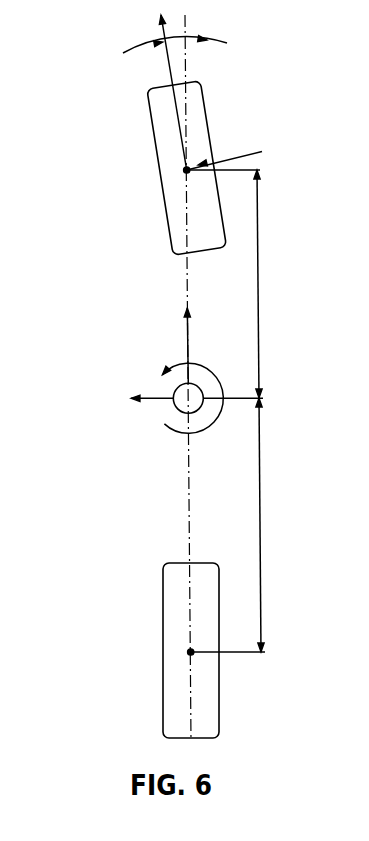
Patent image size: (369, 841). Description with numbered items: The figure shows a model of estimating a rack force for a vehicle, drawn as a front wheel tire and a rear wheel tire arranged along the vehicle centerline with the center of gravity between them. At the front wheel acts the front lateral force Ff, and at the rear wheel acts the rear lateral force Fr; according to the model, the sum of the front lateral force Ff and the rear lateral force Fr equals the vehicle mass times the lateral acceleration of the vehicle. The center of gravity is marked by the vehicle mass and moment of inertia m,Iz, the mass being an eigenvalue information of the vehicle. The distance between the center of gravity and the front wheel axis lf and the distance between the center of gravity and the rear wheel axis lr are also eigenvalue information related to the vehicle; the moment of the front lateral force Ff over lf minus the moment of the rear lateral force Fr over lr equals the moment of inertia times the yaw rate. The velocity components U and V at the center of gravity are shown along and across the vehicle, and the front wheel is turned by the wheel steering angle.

The front lateral force Ff is at (226, 145).
The distance between center of gravity and front wheel axis lf is at (268, 284).
The distance between center of gravity and rear wheel axis lr is at (270, 525).
The longitudinal velocity U is at (198, 345).
The lateral velocity V is at (142, 400).
The vehicle mass and vehicle moment of inertia m,Iz is at (178, 407).
The rear lateral force Fr is at (231, 669).